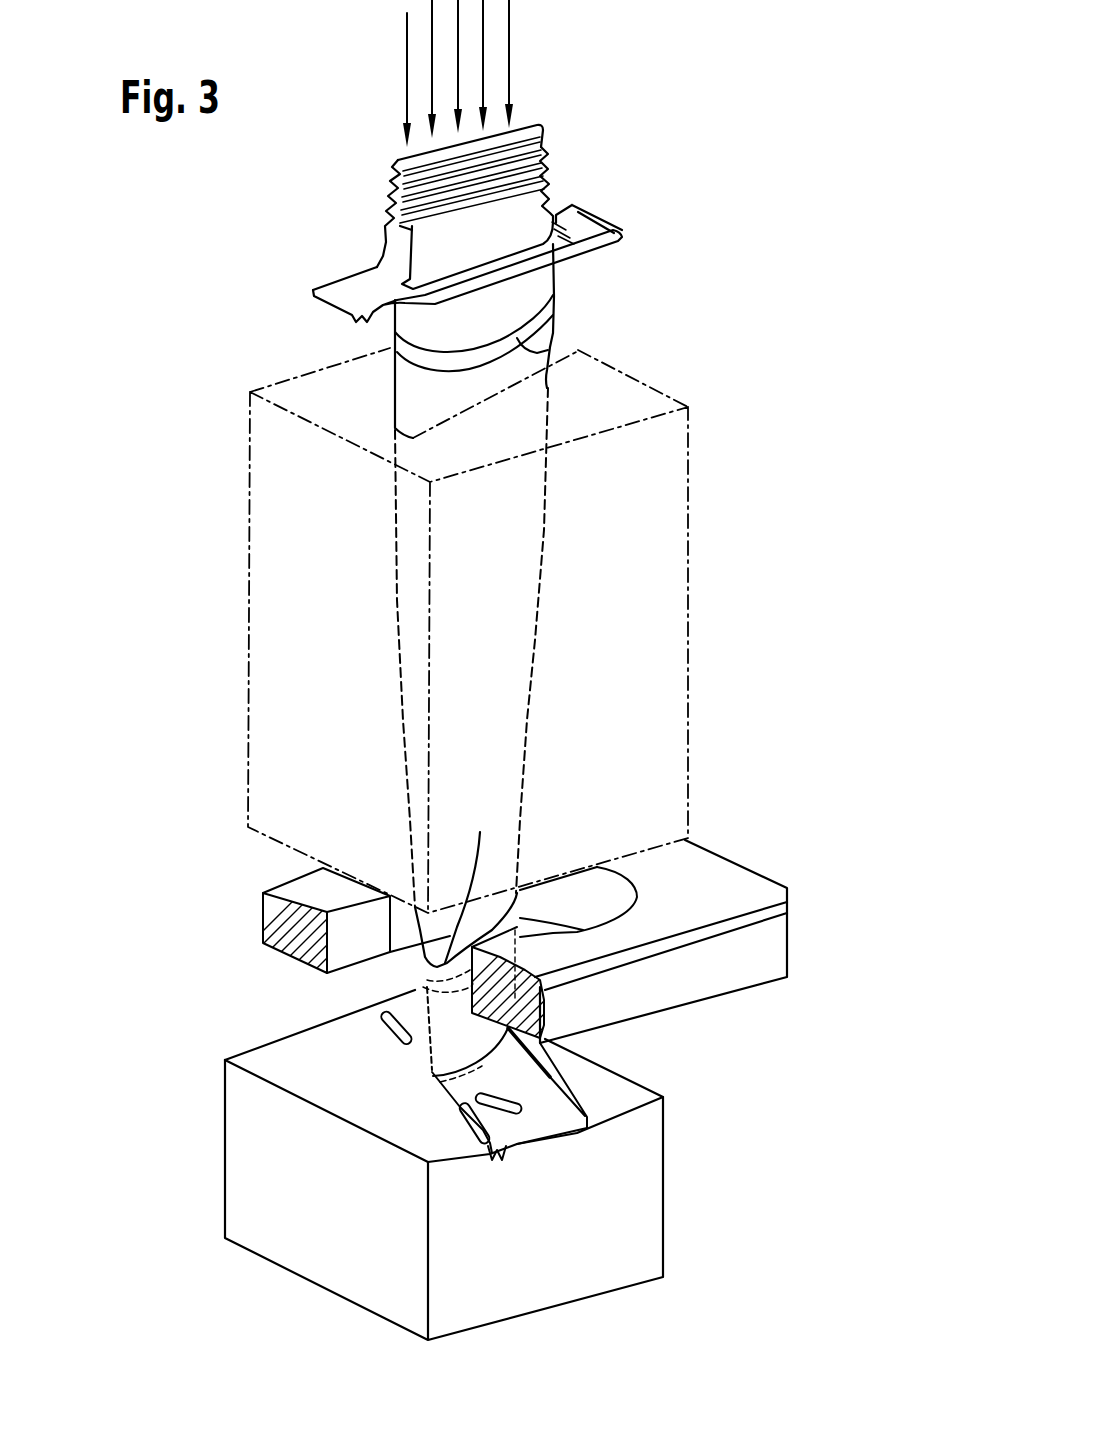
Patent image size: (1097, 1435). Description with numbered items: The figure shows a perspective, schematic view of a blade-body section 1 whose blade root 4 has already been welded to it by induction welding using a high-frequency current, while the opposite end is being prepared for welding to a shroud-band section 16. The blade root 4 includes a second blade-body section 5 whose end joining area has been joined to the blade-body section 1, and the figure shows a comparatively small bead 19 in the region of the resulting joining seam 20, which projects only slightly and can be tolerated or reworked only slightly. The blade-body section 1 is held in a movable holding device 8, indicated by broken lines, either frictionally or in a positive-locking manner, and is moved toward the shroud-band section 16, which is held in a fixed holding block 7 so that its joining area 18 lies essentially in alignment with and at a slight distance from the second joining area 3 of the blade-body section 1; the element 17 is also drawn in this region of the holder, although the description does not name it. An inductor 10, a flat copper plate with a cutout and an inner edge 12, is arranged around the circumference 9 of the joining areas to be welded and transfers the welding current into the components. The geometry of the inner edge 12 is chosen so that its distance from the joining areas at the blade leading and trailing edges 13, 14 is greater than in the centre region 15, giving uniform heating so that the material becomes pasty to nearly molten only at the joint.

The blade-body section 1 is at (526, 647).
The second joining area 3 is at (427, 980).
The blade root 4 is at (385, 228).
The second blade-body section 5 is at (410, 322).
The holding block 7 is at (650, 1263).
The movable holding device 8 is at (690, 684).
The circumference 9 is at (479, 848).
The inductor 10 is at (653, 930).
The inner edge 12 is at (620, 896).
The blade leading edge 13 is at (390, 549).
The blade trailing edge 14 is at (556, 525).
The centre region 15 is at (480, 388).
The shroud-band section 16 is at (535, 1076).
The clamping insert 17 is at (447, 1043).
The joining area 18 is at (387, 1003).
The bead 19 is at (556, 348).
The joining seam 20 is at (563, 291).